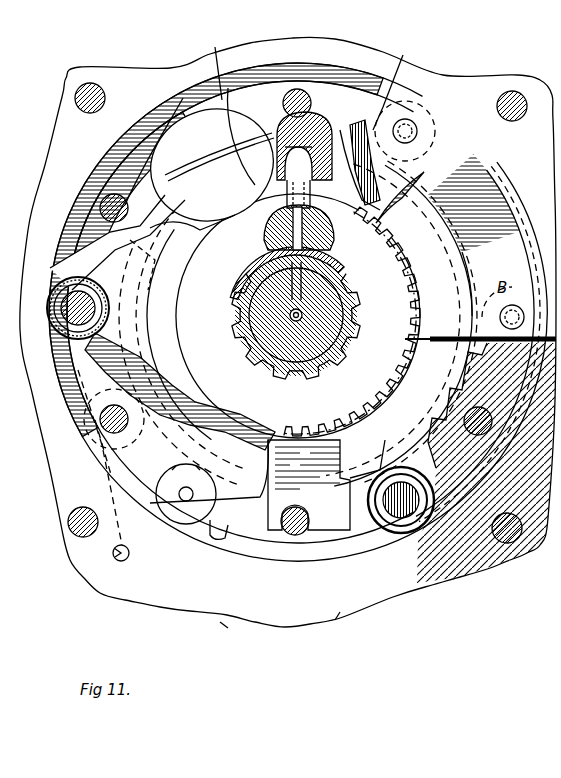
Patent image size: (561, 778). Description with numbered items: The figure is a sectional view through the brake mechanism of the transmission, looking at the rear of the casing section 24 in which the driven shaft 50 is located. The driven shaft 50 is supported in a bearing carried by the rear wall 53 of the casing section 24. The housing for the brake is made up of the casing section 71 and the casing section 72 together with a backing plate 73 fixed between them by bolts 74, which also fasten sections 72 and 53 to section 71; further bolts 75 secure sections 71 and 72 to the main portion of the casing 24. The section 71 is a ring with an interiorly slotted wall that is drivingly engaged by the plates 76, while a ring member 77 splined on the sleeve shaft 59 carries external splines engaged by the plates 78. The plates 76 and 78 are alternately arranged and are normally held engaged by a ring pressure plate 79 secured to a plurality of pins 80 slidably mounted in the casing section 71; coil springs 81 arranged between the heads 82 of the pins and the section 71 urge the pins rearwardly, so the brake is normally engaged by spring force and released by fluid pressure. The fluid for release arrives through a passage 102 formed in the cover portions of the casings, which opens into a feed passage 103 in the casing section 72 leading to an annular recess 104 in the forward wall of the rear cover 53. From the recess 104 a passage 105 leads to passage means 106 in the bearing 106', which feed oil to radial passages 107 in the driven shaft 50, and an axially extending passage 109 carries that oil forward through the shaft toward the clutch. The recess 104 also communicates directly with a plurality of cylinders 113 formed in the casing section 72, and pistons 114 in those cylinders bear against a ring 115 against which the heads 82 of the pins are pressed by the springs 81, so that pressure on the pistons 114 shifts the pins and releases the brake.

The casing section 24 is at (228, 620).
The driven shaft 50 is at (345, 352).
The rear wall 53 is at (185, 105).
The sleeve shaft 59 is at (343, 337).
The casing section 71 is at (463, 87).
The casing section 72 is at (338, 616).
The backing plate 73 is at (313, 542).
The bolts 74 is at (280, 135).
The bolts 75 is at (95, 88).
The plates 76 is at (445, 337).
The ring member 77 is at (398, 260).
The plates 78 is at (292, 430).
The ring pressure plate 79 is at (478, 197).
The pins 80 is at (410, 130).
The coil springs 81 is at (88, 354).
The heads 82 is at (62, 335).
The passage 102 is at (120, 562).
The feed passage 103 is at (100, 492).
The annular recess 104 is at (310, 118).
The passage 105 is at (288, 177).
The passage means 106 is at (277, 273).
The bearing 106' is at (228, 282).
The radial passages 107 is at (330, 287).
The axially extending passage 109 is at (302, 313).
The cylinders 113 is at (215, 560).
The pistons 114 is at (147, 538).
The ring 115 is at (162, 390).